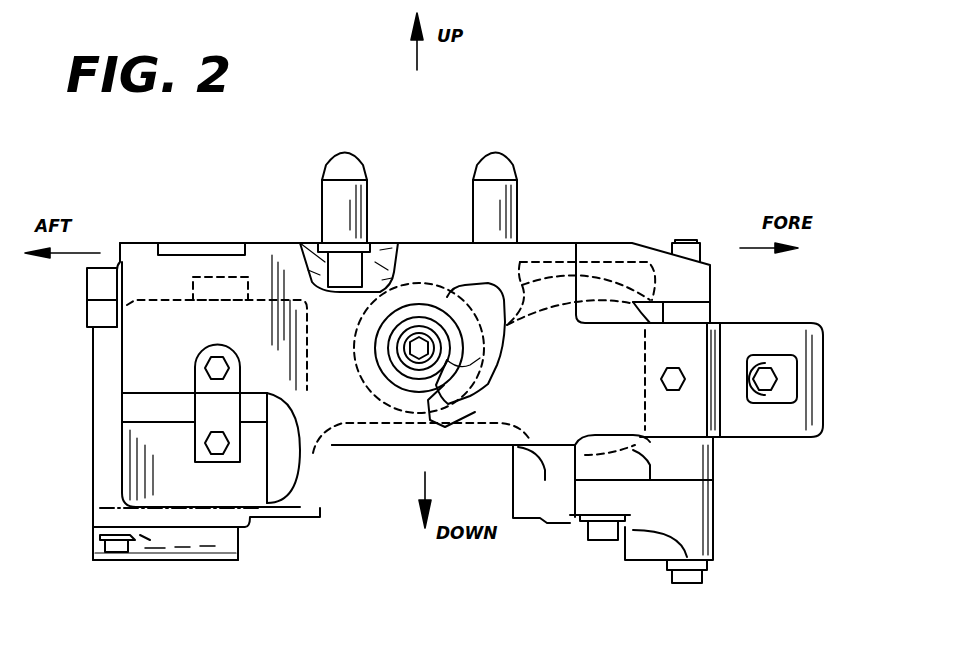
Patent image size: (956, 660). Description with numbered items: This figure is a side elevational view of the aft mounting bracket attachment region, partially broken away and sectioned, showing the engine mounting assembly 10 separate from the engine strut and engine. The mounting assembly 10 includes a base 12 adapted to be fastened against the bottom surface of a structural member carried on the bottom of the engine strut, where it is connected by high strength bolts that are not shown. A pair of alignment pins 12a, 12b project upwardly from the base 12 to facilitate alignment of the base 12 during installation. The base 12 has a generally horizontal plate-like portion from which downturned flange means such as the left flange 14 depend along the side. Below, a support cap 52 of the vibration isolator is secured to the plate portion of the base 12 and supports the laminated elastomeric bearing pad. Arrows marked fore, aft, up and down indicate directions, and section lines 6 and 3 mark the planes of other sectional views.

The engine mounting assembly 10 is at (538, 138).
The base 12 is at (560, 240).
The alignment pin 12a is at (497, 197).
The alignment pin 12b is at (353, 217).
The left flange 14 is at (390, 443).
The support cap 52 is at (208, 543).
The section line 6- 6 is at (405, 106).
The section line 3- 3 is at (834, 145).